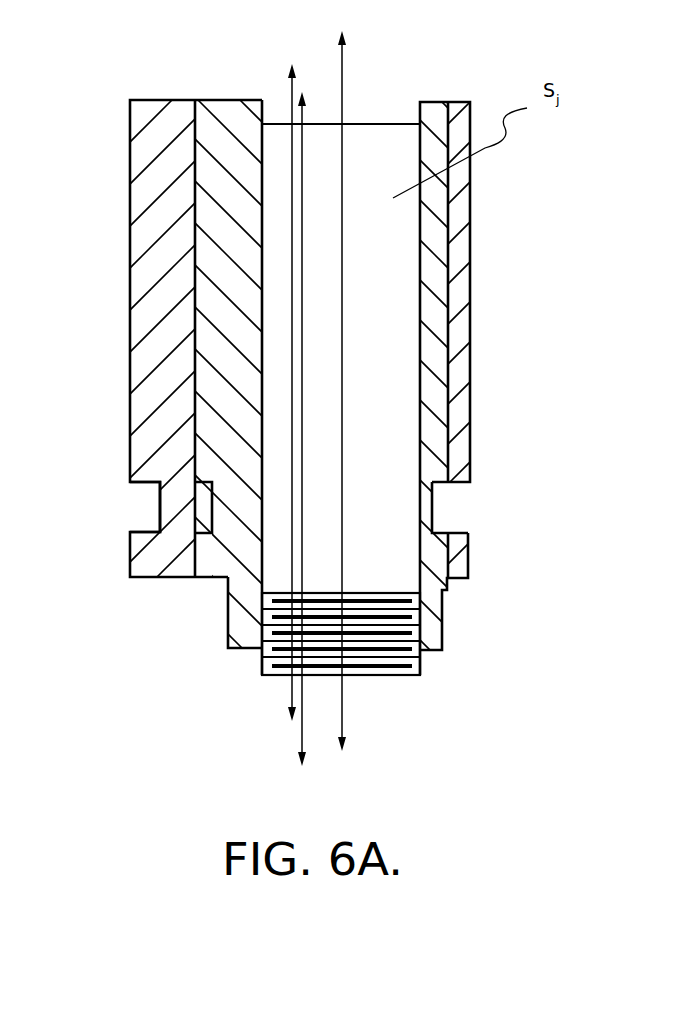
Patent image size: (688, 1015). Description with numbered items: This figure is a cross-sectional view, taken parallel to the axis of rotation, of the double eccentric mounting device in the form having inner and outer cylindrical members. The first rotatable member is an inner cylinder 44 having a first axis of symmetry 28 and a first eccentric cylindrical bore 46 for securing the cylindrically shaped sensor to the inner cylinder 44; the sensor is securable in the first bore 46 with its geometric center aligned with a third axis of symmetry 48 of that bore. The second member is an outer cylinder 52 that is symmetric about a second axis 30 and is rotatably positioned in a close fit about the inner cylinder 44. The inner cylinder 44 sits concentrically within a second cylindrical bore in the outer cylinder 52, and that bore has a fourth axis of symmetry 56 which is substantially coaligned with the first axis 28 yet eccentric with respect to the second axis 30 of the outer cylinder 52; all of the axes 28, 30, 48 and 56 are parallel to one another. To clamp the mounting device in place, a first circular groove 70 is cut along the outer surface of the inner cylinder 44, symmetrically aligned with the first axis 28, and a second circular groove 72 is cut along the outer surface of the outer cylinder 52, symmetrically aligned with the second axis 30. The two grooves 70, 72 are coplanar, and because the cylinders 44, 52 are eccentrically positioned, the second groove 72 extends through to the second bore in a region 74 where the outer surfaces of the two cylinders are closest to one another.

The first axis of symmetry 28 is at (285, 448).
The second axis of symmetry 30 is at (292, 381).
The inner cylinder 44 is at (227, 578).
The first eccentric cylindrical bore 46 is at (421, 103).
The third axis of symmetry 48 is at (342, 381).
The outer cylinder 52 is at (163, 577).
The fourth axis of symmetry 56 is at (313, 778).
The first circular groove 70 is at (203, 490).
The second circular groove 72 is at (140, 510).
The region 74 is at (455, 514).